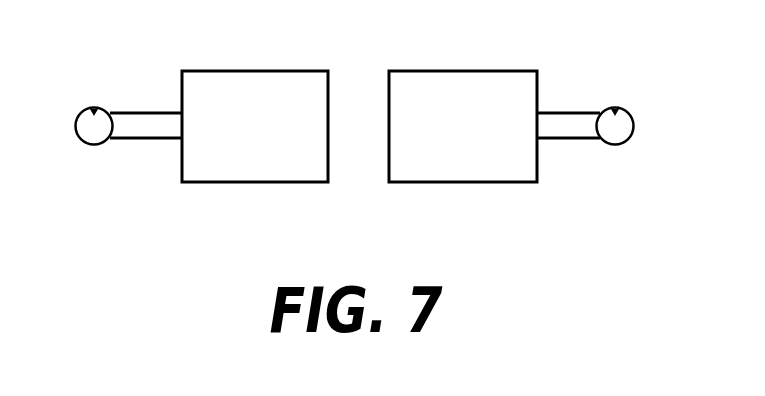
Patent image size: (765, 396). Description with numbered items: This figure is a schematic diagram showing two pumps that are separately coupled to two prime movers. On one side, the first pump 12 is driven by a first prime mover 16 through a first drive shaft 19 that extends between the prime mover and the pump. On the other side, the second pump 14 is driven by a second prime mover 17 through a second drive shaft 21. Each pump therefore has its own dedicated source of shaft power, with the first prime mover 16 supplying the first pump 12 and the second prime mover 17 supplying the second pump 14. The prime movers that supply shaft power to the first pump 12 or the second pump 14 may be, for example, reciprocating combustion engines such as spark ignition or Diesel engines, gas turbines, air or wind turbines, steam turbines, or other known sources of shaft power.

The first pump 12 is at (93, 144).
The second pump 14 is at (617, 144).
The first prime mover 16 is at (243, 139).
The second prime mover 17 is at (451, 139).
The first drive shaft 19 is at (155, 112).
The second drive shaft 21 is at (568, 112).